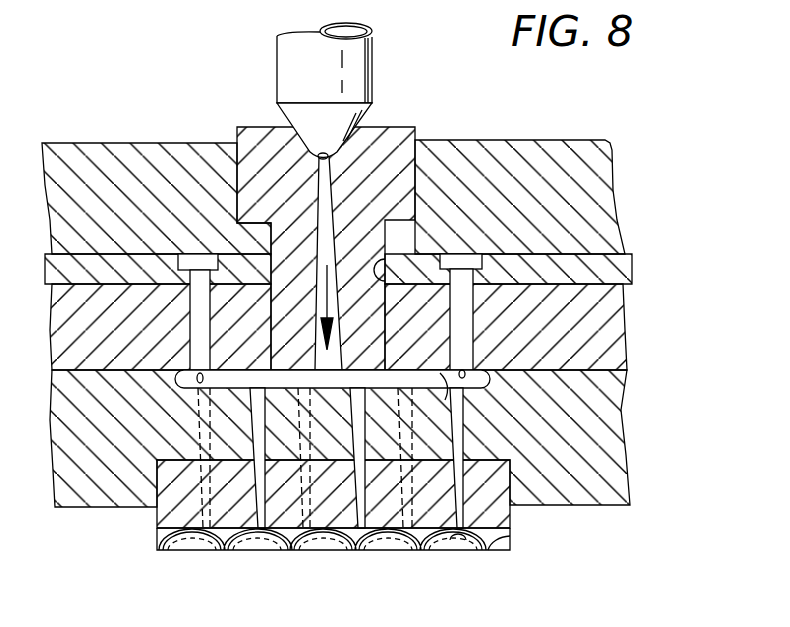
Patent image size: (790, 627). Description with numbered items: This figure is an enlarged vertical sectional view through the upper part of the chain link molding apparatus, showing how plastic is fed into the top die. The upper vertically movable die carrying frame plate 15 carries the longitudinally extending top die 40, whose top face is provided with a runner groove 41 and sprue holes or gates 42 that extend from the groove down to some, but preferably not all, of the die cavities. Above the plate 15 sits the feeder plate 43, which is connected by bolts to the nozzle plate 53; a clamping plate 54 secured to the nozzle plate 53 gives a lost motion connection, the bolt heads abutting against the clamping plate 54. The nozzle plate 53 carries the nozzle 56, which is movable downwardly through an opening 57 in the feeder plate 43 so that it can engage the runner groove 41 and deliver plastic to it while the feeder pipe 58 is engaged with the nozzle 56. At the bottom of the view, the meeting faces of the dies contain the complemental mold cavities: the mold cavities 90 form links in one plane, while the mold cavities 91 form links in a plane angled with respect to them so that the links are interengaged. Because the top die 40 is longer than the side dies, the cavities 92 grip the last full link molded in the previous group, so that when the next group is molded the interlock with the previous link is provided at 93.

The feeder pipe 58 is at (374, 80).
The nozzle 56 is at (410, 160).
The nozzle plate 53 is at (607, 173).
The opening 57 is at (446, 254).
The clamping plate 54 is at (629, 263).
The feeder plate 43 is at (618, 330).
The sprue holes or gates 42 is at (295, 398).
The runner groove 41 is at (480, 389).
The upper die carrying frame plate 15 is at (619, 468).
The top die 40 is at (512, 523).
The cavities 92 is at (511, 548).
The mold cavities 91 is at (208, 536).
The mold cavities 90 is at (284, 549).
The interlock 93 is at (449, 544).